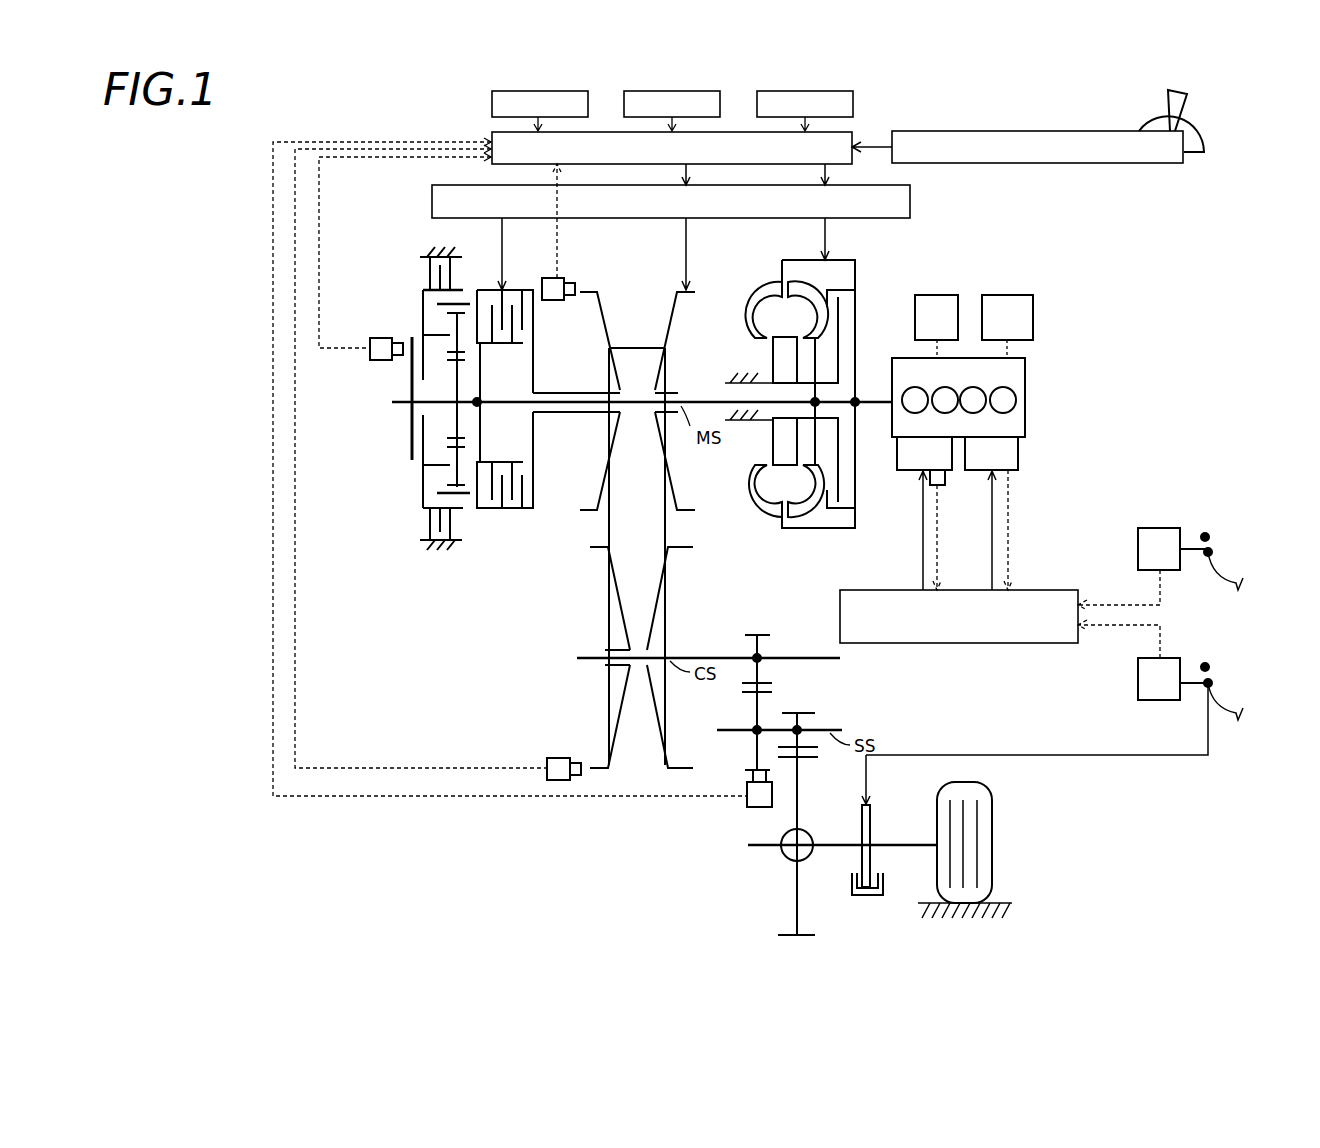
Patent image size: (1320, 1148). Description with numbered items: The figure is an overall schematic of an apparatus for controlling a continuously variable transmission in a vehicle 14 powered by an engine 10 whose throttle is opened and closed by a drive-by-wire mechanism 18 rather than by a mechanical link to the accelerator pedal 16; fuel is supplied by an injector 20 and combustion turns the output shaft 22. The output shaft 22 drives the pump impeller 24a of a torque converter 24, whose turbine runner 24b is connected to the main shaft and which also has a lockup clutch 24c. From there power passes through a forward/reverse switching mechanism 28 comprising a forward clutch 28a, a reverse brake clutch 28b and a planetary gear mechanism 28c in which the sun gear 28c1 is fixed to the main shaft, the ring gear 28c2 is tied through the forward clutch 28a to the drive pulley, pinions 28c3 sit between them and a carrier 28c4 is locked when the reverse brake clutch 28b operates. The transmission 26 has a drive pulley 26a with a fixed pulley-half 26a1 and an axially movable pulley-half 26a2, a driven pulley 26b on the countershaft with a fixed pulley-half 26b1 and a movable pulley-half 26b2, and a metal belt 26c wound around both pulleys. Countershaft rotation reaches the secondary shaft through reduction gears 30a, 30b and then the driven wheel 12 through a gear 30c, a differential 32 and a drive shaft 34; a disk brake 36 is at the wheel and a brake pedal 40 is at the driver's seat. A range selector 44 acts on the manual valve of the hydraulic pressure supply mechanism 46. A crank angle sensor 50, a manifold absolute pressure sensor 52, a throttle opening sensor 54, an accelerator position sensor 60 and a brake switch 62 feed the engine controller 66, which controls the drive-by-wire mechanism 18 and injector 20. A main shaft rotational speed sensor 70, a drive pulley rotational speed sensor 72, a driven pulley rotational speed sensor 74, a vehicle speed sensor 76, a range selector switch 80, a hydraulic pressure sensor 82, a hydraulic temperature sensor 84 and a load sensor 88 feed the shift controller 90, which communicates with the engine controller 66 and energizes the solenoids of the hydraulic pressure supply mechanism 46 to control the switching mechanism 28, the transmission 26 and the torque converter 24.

The engine 10 is at (1022, 437).
The driven wheel 12 is at (992, 812).
The vehicle 14 is at (1243, 180).
The accelerator pedal 16 is at (1242, 582).
The DBW mechanism 18 is at (912, 471).
The injector 20 is at (978, 471).
The output shaft 22 is at (871, 407).
The torque converter 24 is at (809, 395).
The pump impeller 24a is at (768, 288).
The turbine runner 24b is at (807, 512).
The lockup clutch 24c is at (848, 288).
The continuously variable transmission 26 is at (696, 483).
The drive pulley 26a is at (639, 388).
The fixed pulley-half 26a1 is at (600, 300).
The movable pulley-half 26a2 is at (669, 318).
The driven pulley 26b is at (622, 657).
The fixed pulley-half 26b1 is at (686, 550).
The movable pulley-half 26b2 is at (597, 550).
The metal belt 26c is at (628, 526).
The forward/reverse switching mechanism 28 is at (398, 256).
The forward clutch 28a is at (500, 345).
The reverse brake clutch 28b is at (432, 282).
The planetary gear mechanism 28c is at (401, 409).
The sun gear 28c1 is at (453, 422).
The ring gear 28c2 is at (505, 510).
The pinions 28c3 is at (441, 474).
The carrier 28c4 is at (432, 493).
The reduction gear 30a is at (748, 635).
The reduction gear 30b is at (754, 752).
The gear 30c is at (797, 710).
The differential 32 is at (787, 860).
The drive shaft 34 is at (907, 838).
The disk brake 36 is at (856, 875).
The brake pedal 40 is at (1242, 710).
The range selector 44 is at (1184, 97).
The hydraulic pressure supply mechanism 46 is at (912, 206).
The crank angle sensor 50 is at (940, 294).
The manifold absolute pressure sensor 52 is at (1010, 294).
The throttle opening sensor 54 is at (940, 487).
The accelerator position sensor 60 is at (1161, 528).
The brake switch 62 is at (1164, 658).
The engine controller 66 is at (1012, 644).
The NT sensor 70 is at (380, 337).
The NDR sensor 72 is at (549, 277).
The NDN sensor 74 is at (548, 762).
The vehicle speed sensor 76 is at (752, 808).
The range selector switch 80 is at (913, 131).
The hydraulic pressure sensor 82 is at (540, 111).
The hydraulic temperature sensor 84 is at (672, 111).
The load sensor 88 is at (805, 111).
The shift controller 90 is at (737, 131).